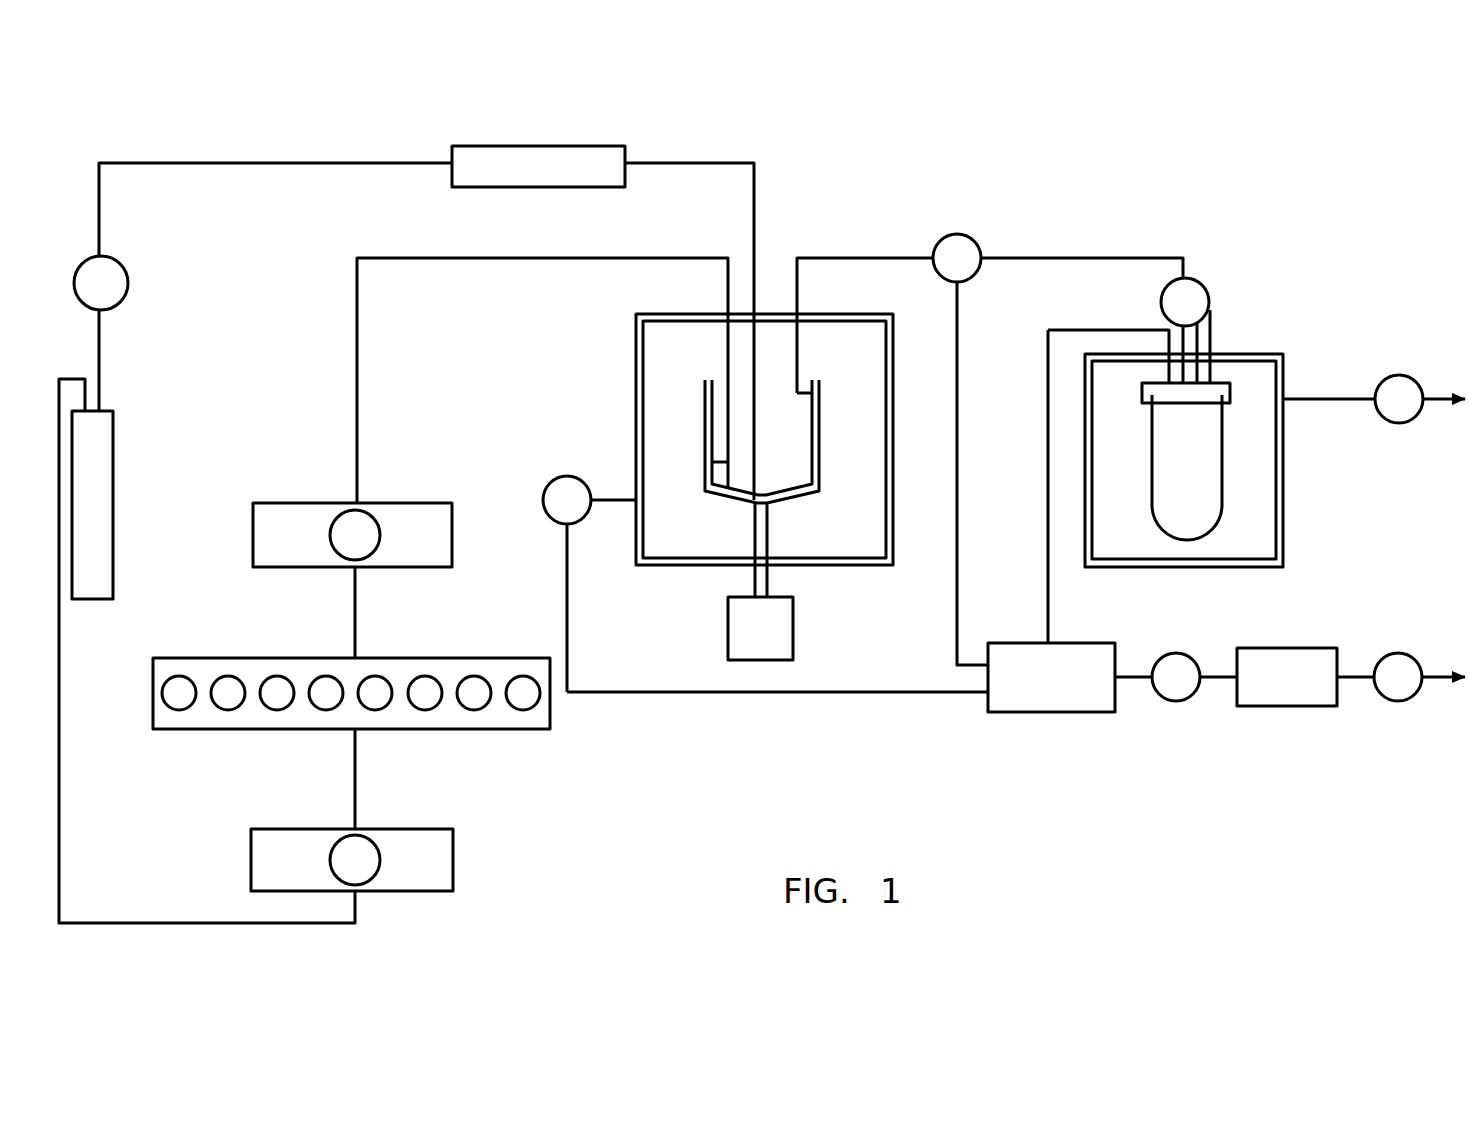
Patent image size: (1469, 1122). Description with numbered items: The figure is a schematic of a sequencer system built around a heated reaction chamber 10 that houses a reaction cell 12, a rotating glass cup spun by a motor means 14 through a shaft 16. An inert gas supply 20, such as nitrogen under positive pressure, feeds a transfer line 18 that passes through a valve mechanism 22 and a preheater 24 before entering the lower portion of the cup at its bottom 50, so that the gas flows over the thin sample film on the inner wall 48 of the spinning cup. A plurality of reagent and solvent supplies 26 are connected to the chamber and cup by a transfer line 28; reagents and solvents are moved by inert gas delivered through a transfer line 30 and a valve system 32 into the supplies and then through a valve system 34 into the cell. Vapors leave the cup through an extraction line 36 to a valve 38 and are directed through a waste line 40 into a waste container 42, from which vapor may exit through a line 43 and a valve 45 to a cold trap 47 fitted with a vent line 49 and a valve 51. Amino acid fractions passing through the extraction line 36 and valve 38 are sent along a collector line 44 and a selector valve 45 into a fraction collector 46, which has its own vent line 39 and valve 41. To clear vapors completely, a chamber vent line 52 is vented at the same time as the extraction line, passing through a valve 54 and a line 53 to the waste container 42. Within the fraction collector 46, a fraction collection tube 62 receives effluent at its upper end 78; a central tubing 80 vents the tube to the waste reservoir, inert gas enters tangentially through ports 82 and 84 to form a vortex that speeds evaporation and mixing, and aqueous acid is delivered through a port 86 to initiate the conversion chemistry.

The reaction chamber 10 is at (636, 358).
The reaction cell 12 is at (705, 432).
The motor means 14 is at (793, 640).
The shaft 16 is at (755, 541).
The transfer line 18 is at (318, 163).
The inert gas supply 20 is at (113, 478).
The valve mechanism 22 is at (128, 283).
The preheater 24 is at (556, 146).
The reagent and solvent supplies 26 is at (462, 730).
The transfer line 28 is at (357, 292).
The transfer line 30 is at (100, 923).
The valve system 32 is at (453, 875).
The valve system 34 is at (285, 503).
The extraction line 36 is at (855, 258).
The valve 38 is at (955, 238).
The vent line 39 is at (1322, 401).
The waste line 40 is at (957, 565).
The valve 41 is at (1379, 416).
The waste container 42 is at (1042, 713).
The line 43 is at (1130, 677).
The collector line 44 is at (1070, 258).
The valve 45 is at (1195, 283).
The fraction collector 46 is at (1283, 384).
The cold trap 47 is at (1246, 707).
The inner wall 48 is at (712, 462).
The vent line 49 is at (1357, 679).
The bottom 50 is at (785, 492).
The valve 51 is at (1380, 658).
The chamber vent line 52 is at (618, 500).
The line 53 is at (640, 693).
The valve 54 is at (543, 496).
The fraction collection tube 62 is at (1220, 518).
The upper end 78 is at (1142, 396).
The central tubing 80 is at (1048, 405).
The port 82 is at (1165, 330).
The port 84 is at (1205, 318).
The port 86 is at (1202, 340).